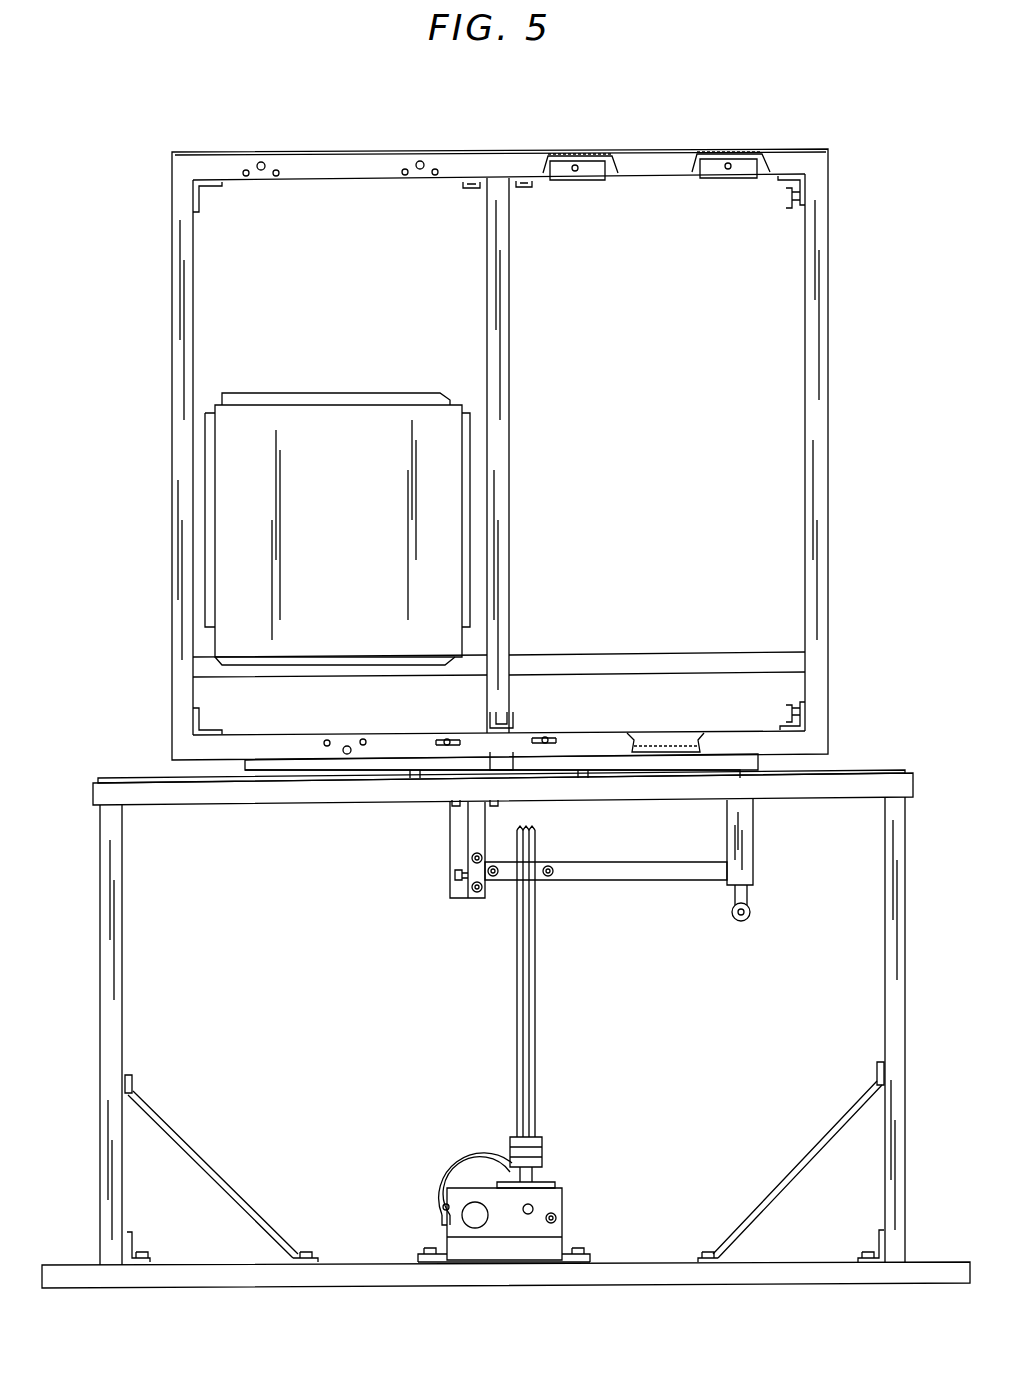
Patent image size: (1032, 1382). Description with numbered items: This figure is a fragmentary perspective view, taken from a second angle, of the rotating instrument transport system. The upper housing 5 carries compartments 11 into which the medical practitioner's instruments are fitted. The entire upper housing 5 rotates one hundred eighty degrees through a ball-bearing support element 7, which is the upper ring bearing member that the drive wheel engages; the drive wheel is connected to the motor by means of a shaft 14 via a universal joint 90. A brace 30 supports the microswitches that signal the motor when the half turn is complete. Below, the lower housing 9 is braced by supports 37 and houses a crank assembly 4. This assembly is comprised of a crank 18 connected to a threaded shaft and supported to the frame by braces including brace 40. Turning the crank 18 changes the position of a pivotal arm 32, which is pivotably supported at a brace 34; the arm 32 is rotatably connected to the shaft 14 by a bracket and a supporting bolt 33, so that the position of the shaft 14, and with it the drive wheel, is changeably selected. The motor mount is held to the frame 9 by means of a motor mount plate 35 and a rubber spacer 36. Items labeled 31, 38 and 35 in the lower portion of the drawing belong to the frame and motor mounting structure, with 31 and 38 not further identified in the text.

The upper housing 5 is at (330, 308).
The compartments 11 is at (225, 480).
The clamp 31 is at (582, 182).
The brace 30 is at (520, 731).
The ball-bearing support element 7 is at (246, 762).
The lower housing 9 is at (880, 787).
The base 38 is at (85, 1270).
The supports 37 is at (240, 1198).
The brace 34 is at (476, 893).
The pivotal arm 32 is at (692, 884).
The supporting bolt 33 is at (495, 877).
The brace 40 is at (724, 827).
The crank assembly 4 is at (786, 865).
The crank 18 is at (740, 921).
The shaft 14 is at (536, 1058).
The universal joint 90 is at (544, 1152).
The rubber spacer 36 is at (422, 1248).
The motor mount plate 35 is at (428, 1266).